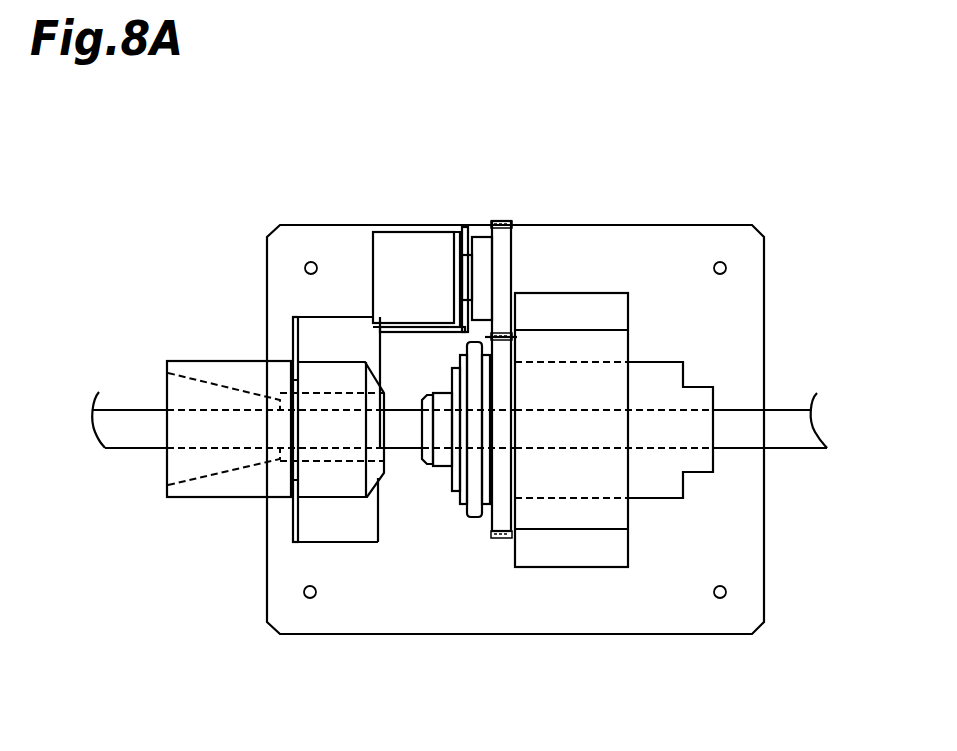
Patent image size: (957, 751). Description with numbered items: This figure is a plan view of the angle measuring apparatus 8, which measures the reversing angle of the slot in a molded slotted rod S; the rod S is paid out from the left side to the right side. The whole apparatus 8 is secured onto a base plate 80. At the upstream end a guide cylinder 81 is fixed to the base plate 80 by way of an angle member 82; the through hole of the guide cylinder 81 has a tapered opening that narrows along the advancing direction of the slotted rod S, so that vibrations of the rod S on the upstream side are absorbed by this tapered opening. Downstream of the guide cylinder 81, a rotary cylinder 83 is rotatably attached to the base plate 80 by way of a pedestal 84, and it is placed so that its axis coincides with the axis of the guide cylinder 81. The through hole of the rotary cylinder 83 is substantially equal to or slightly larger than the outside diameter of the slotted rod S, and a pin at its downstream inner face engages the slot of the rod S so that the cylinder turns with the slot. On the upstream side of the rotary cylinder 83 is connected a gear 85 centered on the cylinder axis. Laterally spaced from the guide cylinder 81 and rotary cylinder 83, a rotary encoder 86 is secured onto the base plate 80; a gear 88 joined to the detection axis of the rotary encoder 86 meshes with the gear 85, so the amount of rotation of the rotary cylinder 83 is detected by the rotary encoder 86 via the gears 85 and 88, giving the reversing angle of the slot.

The angle measuring apparatus 8 is at (668, 112).
The slotted rod S is at (123, 450).
The base plate 80 is at (757, 522).
The guide cylinder 81 is at (218, 495).
The angle member 82 is at (337, 535).
The rotary cylinder 83 is at (672, 365).
The pedestal 84 is at (593, 557).
The gear 85 is at (490, 520).
The rotary encoder 86 is at (418, 238).
The gear 88 is at (515, 244).